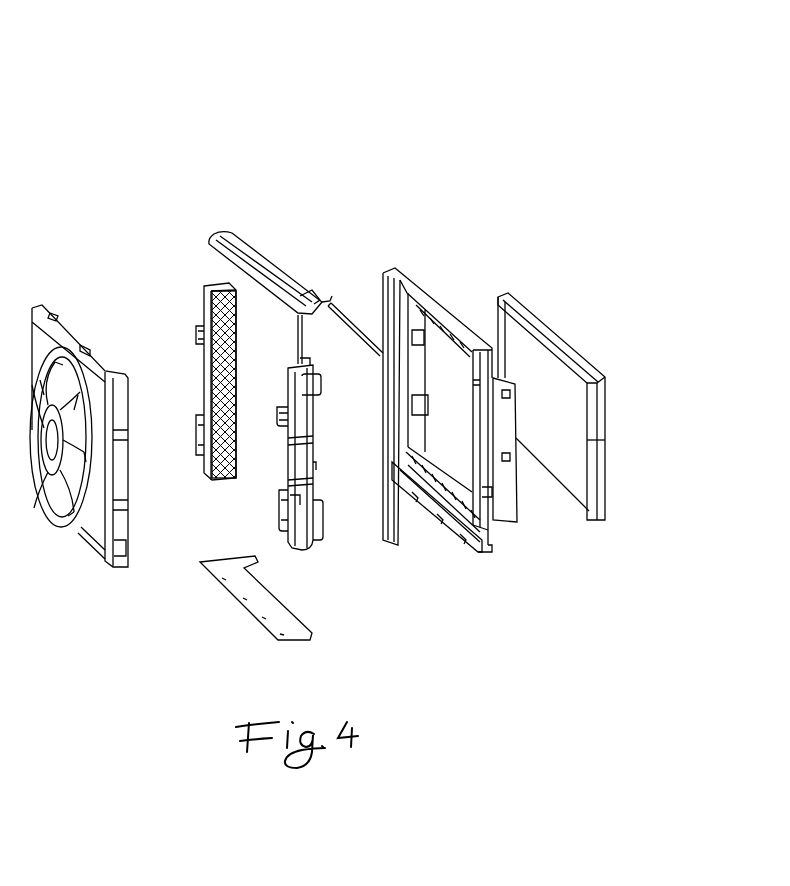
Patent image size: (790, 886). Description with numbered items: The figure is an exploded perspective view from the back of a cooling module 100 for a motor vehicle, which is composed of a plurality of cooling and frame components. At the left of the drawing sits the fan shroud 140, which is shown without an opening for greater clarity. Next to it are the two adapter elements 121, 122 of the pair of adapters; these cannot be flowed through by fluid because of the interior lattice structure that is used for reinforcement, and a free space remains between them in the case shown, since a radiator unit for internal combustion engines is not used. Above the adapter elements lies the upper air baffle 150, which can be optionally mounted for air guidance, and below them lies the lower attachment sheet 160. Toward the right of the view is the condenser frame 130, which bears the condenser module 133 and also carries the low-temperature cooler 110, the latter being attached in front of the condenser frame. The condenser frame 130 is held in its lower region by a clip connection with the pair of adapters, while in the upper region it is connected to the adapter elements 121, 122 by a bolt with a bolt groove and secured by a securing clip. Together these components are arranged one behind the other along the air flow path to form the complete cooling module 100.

The cooling module 100 is at (493, 51).
The low-temperature cooler 110 is at (554, 316).
The adapter element 121 is at (201, 273).
The adapter element 122 is at (318, 558).
The condenser frame 130 is at (431, 279).
The condenser module 133 is at (337, 298).
The fan shroud 140 is at (79, 363).
The upper air baffle 150 is at (244, 230).
The lower attachment sheet 160 is at (303, 643).